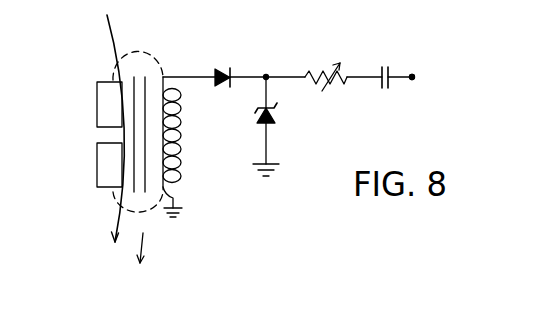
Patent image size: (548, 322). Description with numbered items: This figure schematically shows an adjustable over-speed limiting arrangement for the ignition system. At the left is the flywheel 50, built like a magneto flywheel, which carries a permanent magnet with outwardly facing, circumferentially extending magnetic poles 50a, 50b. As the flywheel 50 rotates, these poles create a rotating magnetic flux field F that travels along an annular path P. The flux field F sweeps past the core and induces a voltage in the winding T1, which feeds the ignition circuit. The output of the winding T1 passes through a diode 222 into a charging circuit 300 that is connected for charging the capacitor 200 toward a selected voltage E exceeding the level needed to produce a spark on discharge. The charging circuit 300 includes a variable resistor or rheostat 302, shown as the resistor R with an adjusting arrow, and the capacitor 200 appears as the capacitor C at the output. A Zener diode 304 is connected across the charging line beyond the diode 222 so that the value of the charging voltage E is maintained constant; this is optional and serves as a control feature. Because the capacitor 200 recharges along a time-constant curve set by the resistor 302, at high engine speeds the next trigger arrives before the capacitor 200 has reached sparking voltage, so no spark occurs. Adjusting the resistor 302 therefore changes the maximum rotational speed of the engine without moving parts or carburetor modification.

The flywheel 50 is at (112, 33).
The magnetic pole 50a is at (97, 113).
The magnetic pole 50b is at (97, 158).
The magnetic flux field F is at (160, 62).
The annular path P is at (138, 262).
The winding T1 is at (177, 153).
The diode 222 is at (225, 67).
The Zener diode 304 is at (276, 118).
The charging circuit 300 is at (332, 40).
The resistor R is at (327, 56).
The variable resistor 302 is at (331, 80).
The capacitor C is at (387, 64).
The capacitor 200 is at (391, 68).